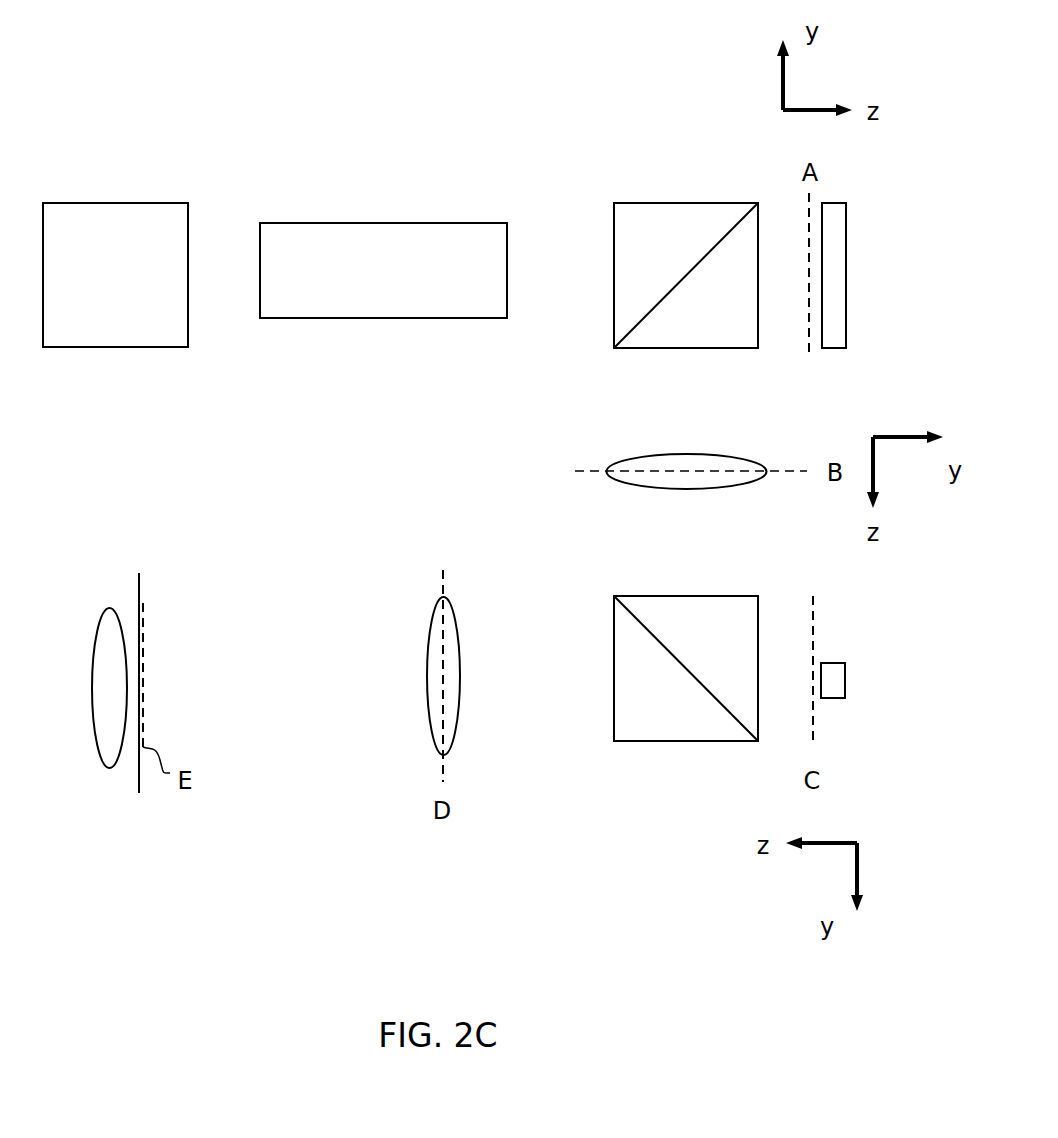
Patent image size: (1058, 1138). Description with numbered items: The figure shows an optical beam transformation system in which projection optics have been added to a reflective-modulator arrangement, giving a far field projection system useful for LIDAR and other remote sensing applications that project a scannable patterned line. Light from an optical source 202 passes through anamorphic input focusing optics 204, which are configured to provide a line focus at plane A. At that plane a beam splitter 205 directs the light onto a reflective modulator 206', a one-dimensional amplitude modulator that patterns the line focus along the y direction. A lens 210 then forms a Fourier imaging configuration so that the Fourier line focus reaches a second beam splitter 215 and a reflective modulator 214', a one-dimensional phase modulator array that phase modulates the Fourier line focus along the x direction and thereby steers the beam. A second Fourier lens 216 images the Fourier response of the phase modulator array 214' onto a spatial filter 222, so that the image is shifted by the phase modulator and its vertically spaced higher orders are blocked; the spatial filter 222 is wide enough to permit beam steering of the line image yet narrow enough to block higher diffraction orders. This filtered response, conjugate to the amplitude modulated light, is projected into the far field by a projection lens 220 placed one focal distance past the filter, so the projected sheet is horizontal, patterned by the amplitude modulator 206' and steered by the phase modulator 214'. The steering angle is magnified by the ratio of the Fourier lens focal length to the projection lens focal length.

The optical source 202 is at (115, 275).
The anamorphic input focusing optics 204 is at (383, 270).
The beam splitter 205 is at (645, 223).
The reflective modulator 206' is at (877, 275).
The lens 210 is at (685, 482).
The beam splitter 215 is at (662, 723).
The reflective modulator 214' is at (876, 680).
The second Fourier lens 216 is at (435, 620).
The projection lens 220 is at (110, 757).
The spatial filter 222 is at (138, 588).